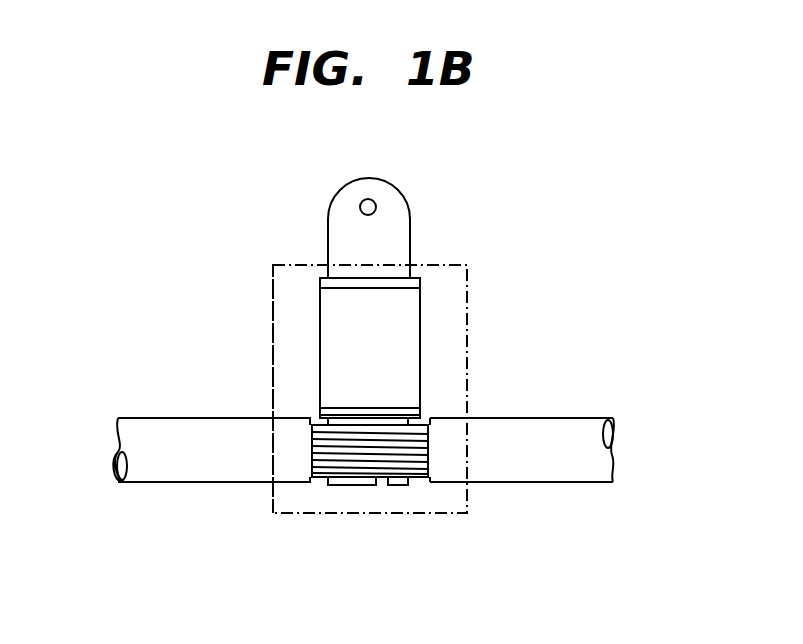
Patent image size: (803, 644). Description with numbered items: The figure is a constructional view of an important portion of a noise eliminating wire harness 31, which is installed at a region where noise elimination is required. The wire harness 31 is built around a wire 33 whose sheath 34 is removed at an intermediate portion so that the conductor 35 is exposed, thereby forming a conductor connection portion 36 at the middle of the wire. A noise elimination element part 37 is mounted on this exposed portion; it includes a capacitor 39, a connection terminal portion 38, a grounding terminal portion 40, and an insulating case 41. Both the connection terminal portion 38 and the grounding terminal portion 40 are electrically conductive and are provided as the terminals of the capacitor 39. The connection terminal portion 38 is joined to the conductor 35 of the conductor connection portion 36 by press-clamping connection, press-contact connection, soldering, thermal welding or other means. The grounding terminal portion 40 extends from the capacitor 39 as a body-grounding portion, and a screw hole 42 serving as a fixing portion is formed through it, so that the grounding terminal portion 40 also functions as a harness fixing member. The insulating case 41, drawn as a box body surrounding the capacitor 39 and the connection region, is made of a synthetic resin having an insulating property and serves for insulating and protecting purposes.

The wire harness 31 is at (213, 292).
The wire 33 is at (172, 418).
The sheath 34 is at (197, 465).
The conductor 35 is at (418, 480).
The conductor connection portion 36 is at (383, 465).
The noise elimination element part 37 is at (440, 262).
The connection terminal portion 38 is at (347, 487).
The capacitor 39 is at (403, 345).
The grounding terminal portion 40 is at (357, 243).
The insulating case 41 is at (270, 378).
The screw hole 42 is at (373, 204).